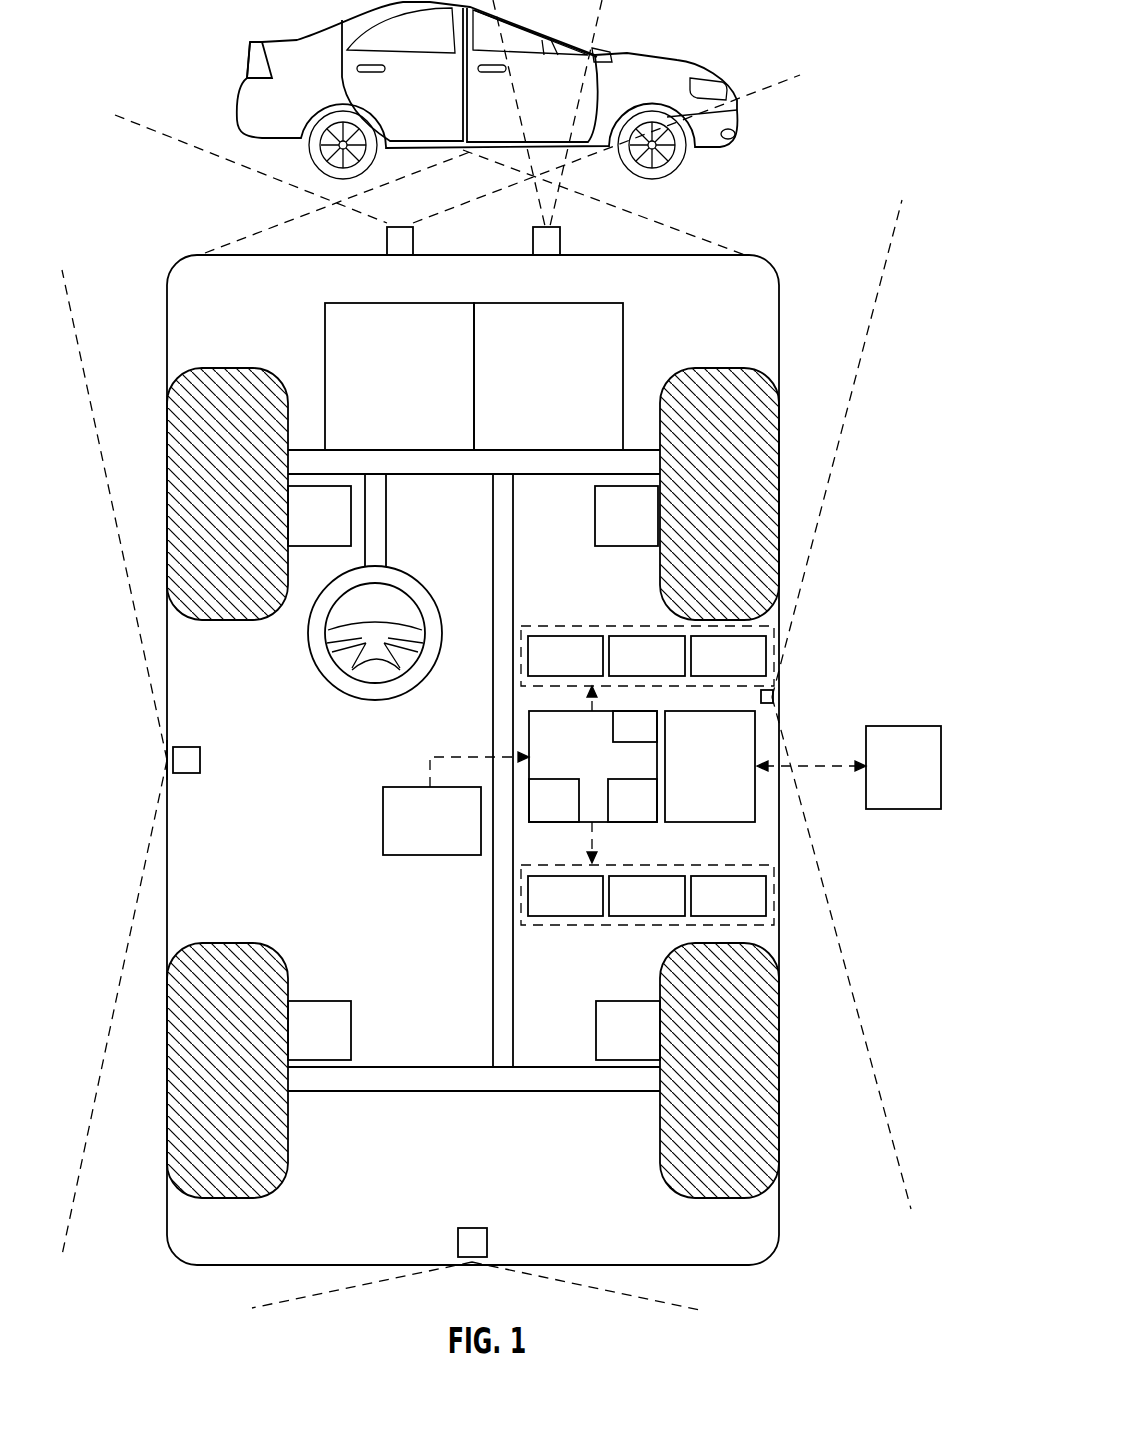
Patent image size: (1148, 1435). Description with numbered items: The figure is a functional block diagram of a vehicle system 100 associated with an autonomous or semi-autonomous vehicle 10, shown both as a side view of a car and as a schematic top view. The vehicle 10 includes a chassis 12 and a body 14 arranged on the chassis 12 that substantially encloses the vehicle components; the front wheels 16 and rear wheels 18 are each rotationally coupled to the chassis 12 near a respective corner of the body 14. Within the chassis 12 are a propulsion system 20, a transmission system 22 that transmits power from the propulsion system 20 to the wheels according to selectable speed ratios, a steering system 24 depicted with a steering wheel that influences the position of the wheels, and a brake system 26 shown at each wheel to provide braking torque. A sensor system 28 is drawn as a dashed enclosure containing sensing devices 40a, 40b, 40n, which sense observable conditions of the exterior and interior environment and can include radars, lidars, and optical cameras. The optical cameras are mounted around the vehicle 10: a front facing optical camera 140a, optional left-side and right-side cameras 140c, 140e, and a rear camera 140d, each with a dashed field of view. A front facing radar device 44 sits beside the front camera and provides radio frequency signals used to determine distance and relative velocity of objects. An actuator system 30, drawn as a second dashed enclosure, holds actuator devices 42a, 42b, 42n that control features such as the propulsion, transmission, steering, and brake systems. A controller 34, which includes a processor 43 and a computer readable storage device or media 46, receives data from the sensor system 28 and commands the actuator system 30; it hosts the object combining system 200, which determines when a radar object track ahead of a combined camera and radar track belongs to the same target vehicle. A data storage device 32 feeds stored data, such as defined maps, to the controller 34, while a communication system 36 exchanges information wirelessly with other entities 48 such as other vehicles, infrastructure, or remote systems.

The vehicle 10 is at (248, 77).
The vehicle system 100 is at (822, 185).
The chassis 12 is at (493, 922).
The body 14 is at (167, 758).
The front wheels 16 is at (228, 368).
The rear wheels 18 is at (228, 1198).
The propulsion system 20 is at (385, 394).
The transmission system 22 is at (532, 394).
The steering system 24 is at (395, 545).
The brake system 26 is at (305, 532).
The sensor system 28 is at (608, 626).
The actuator system 30 is at (613, 927).
The data storage device 32 is at (417, 836).
The controller 34 is at (577, 766).
The communication system 36 is at (696, 781).
The sensing device 40a is at (545, 672).
The sensing device 40b is at (627, 672).
The sensing device 40n is at (708, 672).
The actuator device 42a is at (545, 912).
The actuator device 42b is at (627, 912).
The actuator device 42n is at (708, 912).
The processor 43 is at (540, 816).
The front facing radar device 44 is at (562, 240).
The computer readable storage device or media 46 is at (618, 816).
The other entities 48 is at (890, 782).
The object combining system 200 is at (635, 725).
The front facing optical camera 140a is at (387, 245).
The left-side camera 140c is at (201, 760).
The rear camera 140d is at (478, 1228).
The right-side camera 140e is at (774, 697).